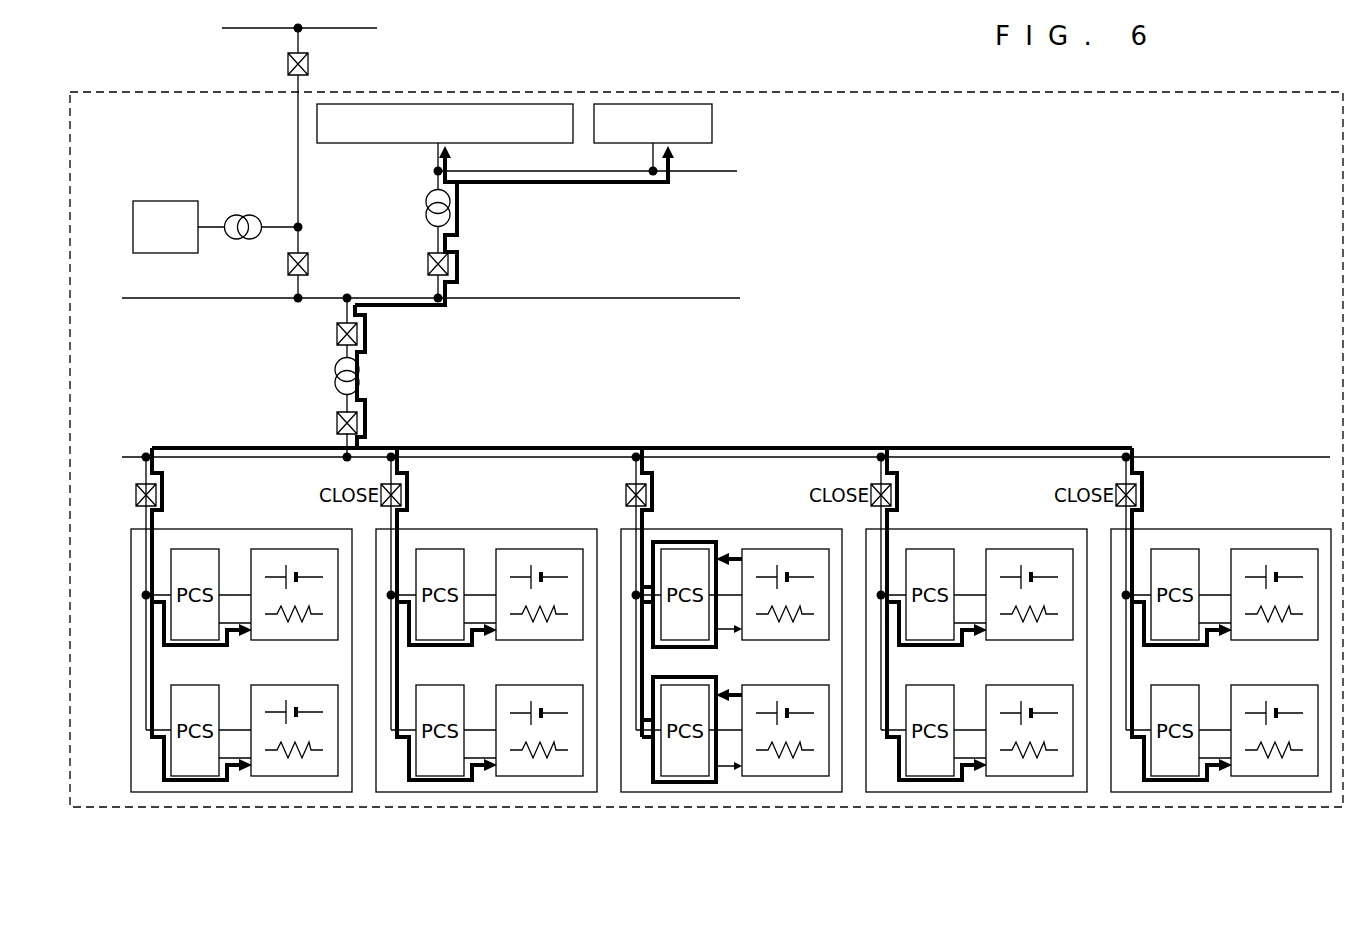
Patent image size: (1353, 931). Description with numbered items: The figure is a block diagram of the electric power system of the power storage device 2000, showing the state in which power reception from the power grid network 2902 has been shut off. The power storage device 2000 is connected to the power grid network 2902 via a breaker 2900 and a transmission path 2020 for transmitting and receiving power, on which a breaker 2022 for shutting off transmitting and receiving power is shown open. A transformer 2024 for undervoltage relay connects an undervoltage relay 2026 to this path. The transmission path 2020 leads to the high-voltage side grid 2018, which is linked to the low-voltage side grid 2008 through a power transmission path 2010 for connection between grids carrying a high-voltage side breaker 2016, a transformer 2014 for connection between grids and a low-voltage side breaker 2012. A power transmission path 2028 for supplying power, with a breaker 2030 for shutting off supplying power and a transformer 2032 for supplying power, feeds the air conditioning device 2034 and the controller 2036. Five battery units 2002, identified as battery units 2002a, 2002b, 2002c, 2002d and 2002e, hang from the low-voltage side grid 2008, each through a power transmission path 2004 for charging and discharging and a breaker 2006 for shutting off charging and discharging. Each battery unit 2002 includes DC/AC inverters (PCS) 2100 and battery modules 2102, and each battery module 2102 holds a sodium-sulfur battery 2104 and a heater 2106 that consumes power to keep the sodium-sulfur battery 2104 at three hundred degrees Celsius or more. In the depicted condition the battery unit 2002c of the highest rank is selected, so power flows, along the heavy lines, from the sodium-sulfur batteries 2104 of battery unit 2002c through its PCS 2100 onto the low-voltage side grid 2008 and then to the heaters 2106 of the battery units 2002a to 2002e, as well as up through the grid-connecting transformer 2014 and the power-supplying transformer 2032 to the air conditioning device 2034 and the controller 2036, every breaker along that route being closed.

The power storage device 2000 is at (852, 92).
The battery unit 2002 is at (702, 647).
The battery unit 2002a is at (219, 647).
The battery unit 2002b is at (458, 647).
The battery unit 2002c is at (703, 647).
The battery unit 2002d is at (948, 647).
The battery unit 2002e is at (1192, 647).
The power transmission path for charging and discharging 2004 is at (680, 592).
The breaker for shutting off charging and discharging 2006 is at (647, 492).
The low-voltage side grid 2008 is at (1276, 457).
The power transmission path for connection between grids 2010 is at (366, 400).
The low-voltage side breaker for shutting off connection between grids 2012 is at (366, 426).
The transformer for connection between grids 2014 is at (362, 372).
The high-voltage side breaker for shutting off connection between grids 2016 is at (358, 334).
The high-voltage side grid 2018 is at (708, 298).
The transmission path for transmitting and receiving power 2020 is at (300, 183).
The breaker for shutting off transmitting and receiving power 2022 is at (308, 262).
The transformer for undervoltage relay 2024 is at (247, 215).
The undervoltage relay 2026 is at (167, 201).
The power transmission path for supplying power 2028 is at (458, 240).
The breaker for shutting off supplying power 2030 is at (449, 265).
The transformer for supplying power 2032 is at (452, 206).
The air conditioning device 2034 is at (463, 104).
The controller 2036 is at (666, 104).
The DC/AC inverter (PCS) 2100 is at (211, 667).
The battery module 2102 is at (306, 654).
The sodium-sulfur battery 2104 is at (288, 644).
The heater 2106 is at (285, 726).
The breaker 2900 is at (310, 63).
The power grid network 2902 is at (352, 27).